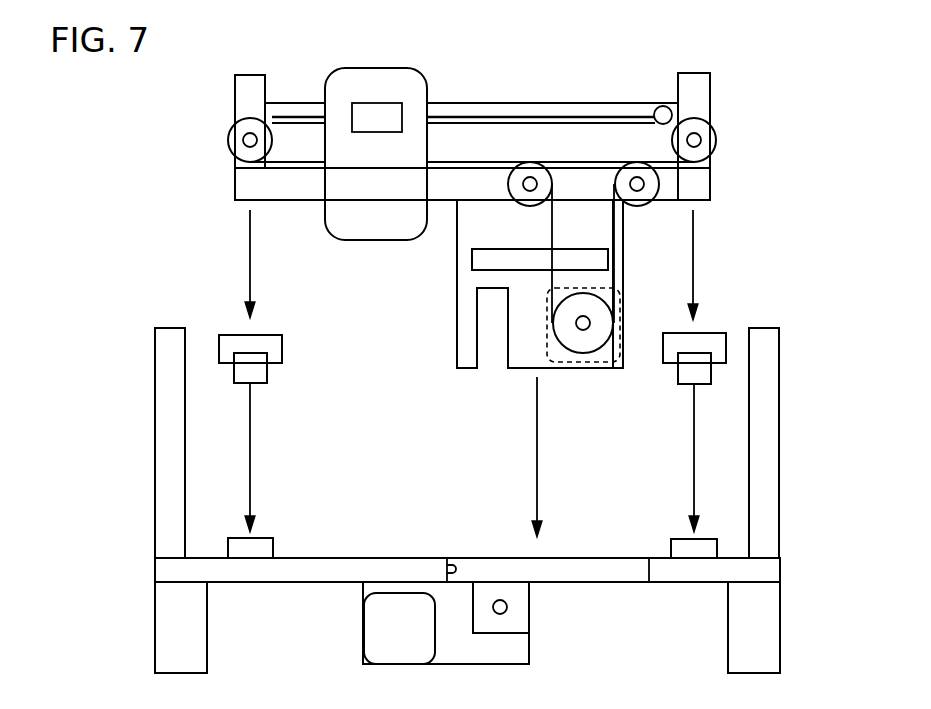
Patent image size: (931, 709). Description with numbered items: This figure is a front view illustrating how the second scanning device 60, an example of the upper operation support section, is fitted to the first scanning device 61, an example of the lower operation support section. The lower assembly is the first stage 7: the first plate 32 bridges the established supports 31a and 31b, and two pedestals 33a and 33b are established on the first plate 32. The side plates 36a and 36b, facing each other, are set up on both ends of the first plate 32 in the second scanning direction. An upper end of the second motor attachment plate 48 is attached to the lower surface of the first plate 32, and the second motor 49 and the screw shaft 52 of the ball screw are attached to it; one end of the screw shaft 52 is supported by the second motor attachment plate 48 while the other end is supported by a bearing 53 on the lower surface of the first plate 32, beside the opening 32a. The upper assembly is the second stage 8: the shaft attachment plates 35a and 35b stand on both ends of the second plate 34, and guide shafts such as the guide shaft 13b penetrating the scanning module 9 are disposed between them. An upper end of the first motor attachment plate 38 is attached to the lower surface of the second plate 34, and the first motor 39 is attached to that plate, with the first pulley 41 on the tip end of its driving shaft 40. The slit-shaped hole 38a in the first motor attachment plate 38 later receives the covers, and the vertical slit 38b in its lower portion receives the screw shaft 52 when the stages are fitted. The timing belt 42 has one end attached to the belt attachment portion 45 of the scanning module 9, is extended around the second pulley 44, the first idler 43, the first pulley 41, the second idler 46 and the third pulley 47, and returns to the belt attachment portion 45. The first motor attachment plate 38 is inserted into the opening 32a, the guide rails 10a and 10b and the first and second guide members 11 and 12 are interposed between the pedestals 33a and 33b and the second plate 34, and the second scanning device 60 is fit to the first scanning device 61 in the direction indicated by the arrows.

The first stage 7 is at (798, 553).
The second stage 8 is at (765, 68).
The scanning module 9 is at (390, 68).
The guide rail 10a is at (267, 378).
The guide rail 10b is at (678, 378).
The first guide member 11 is at (282, 344).
The second guide member 12 is at (710, 333).
The guide shaft 13b is at (546, 103).
The support 31a is at (155, 636).
The support 31b is at (728, 632).
The first plate 32 is at (308, 583).
The opening 32a is at (448, 557).
The pedestal 33a is at (270, 538).
The pedestal 33b is at (678, 538).
The second plate 34 is at (235, 185).
The shaft attachment plate 35a is at (235, 82).
The shaft attachment plate 35b is at (710, 82).
The side plate 36a is at (155, 358).
The side plate 36b is at (779, 358).
The first motor attachment plate 38 is at (457, 296).
The hole 38a is at (608, 258).
The slit 38b is at (505, 362).
The first motor 39 is at (582, 362).
The driving shaft 40 is at (585, 323).
The first pulley 41 is at (598, 310).
The timing belt 42 is at (552, 232).
The first idler 43 is at (525, 162).
The second pulley 44 is at (228, 140).
The belt attachment portion 45 is at (362, 103).
The second idler 46 is at (631, 162).
The third pulley 47 is at (716, 138).
The second motor attachment plate 48 is at (530, 650).
The second motor 49 is at (366, 647).
The screw shaft 52 is at (508, 607).
The bearing 53 is at (520, 622).
The second scanning device 60 is at (168, 145).
The first scanning device 61 is at (136, 490).